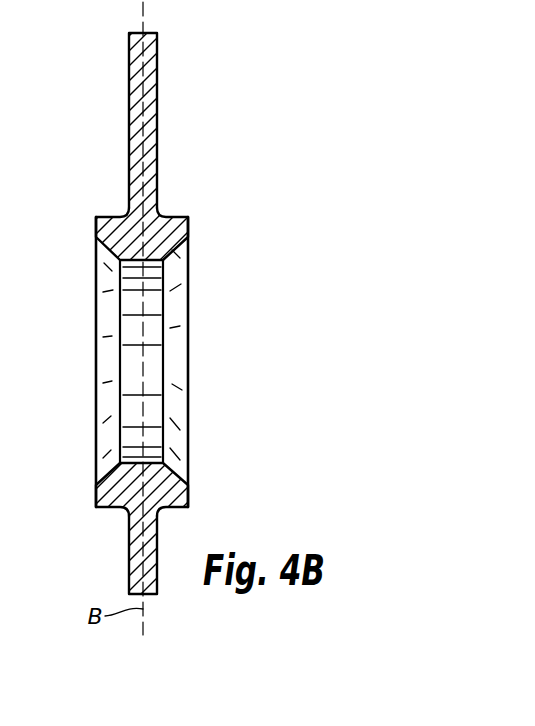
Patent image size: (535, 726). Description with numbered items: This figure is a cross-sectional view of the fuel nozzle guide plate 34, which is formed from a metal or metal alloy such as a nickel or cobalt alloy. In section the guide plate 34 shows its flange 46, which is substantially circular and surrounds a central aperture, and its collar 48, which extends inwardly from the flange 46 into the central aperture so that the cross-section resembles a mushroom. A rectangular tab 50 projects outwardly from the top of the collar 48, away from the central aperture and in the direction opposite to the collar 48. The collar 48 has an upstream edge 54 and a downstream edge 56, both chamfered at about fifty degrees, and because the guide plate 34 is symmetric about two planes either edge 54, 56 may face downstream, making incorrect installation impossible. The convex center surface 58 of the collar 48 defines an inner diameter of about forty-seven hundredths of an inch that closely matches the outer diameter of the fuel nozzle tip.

The fuel nozzle guide plate 34 is at (267, 350).
The flange 46 is at (138, 545).
The collar 48 is at (165, 228).
The tab 50 is at (157, 55).
The upstream edge 54 is at (178, 403).
The downstream edge 56 is at (104, 312).
The center surface 58 is at (153, 325).